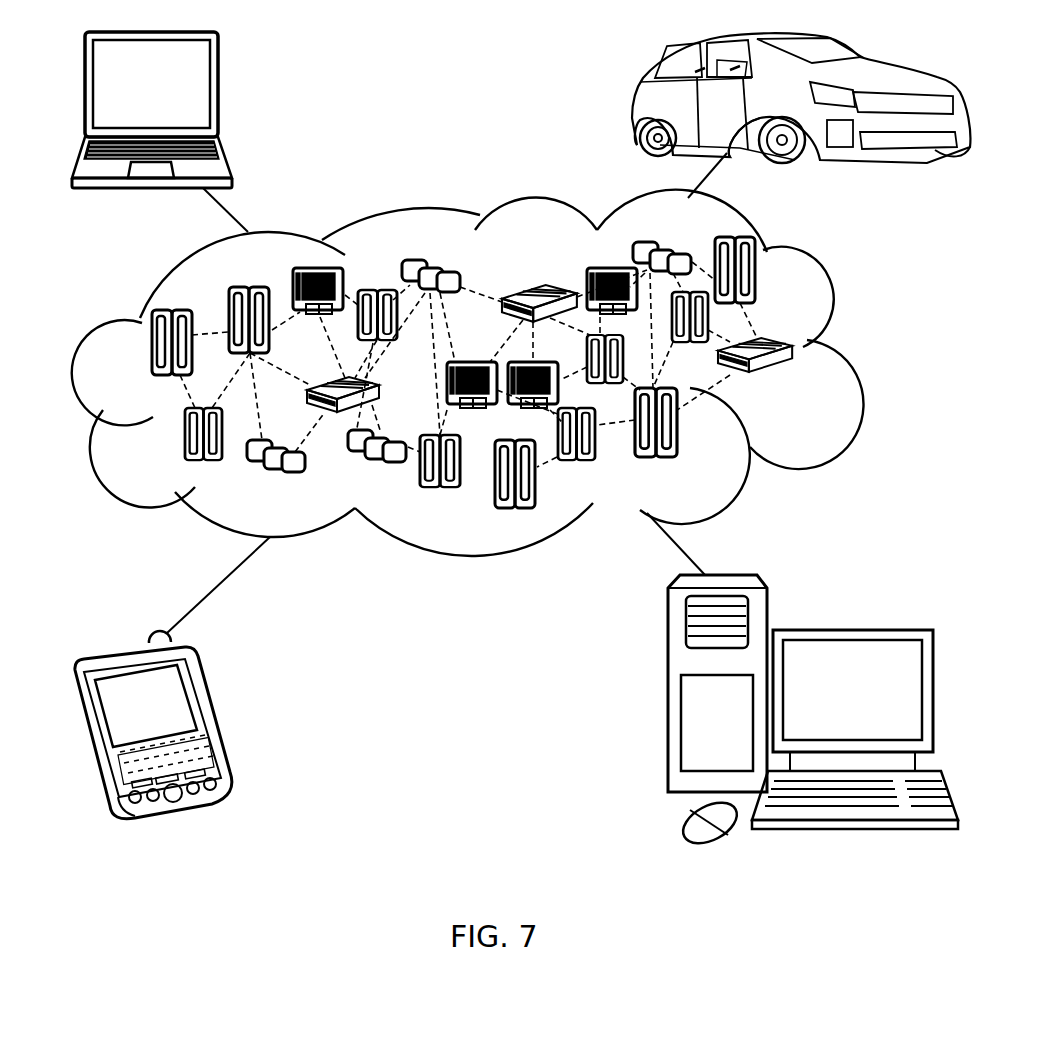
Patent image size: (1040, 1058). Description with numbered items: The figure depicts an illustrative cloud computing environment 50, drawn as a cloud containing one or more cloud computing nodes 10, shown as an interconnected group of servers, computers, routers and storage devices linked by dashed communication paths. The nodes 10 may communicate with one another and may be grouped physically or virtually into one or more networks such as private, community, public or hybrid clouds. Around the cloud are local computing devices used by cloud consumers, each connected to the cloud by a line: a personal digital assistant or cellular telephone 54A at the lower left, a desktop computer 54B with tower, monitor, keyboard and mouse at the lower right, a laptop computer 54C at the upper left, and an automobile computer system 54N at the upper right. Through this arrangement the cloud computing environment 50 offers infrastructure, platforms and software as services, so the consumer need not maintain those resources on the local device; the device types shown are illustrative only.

The laptop computer 54C is at (222, 92).
The automobile computer system 54N is at (642, 103).
The cloud computing environment 50 is at (853, 352).
The cloud computing nodes 10 is at (807, 382).
The personal digital assistant or cellular telephone 54A is at (206, 718).
The desktop computer 54B is at (850, 630).